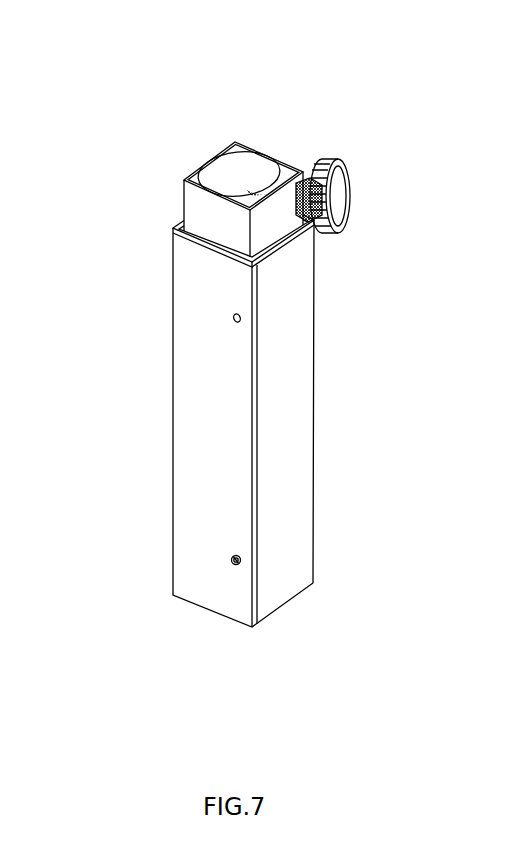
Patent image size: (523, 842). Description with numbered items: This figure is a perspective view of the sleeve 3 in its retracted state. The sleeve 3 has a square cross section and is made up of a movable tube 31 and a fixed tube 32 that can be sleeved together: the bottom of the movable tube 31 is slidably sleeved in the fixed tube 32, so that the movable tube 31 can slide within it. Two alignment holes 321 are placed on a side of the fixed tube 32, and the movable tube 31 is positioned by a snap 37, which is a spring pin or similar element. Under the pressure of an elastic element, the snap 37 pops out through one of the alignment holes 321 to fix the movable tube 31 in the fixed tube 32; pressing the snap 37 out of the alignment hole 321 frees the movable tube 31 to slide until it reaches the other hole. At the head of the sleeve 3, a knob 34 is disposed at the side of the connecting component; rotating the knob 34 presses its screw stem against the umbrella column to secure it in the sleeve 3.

The sleeve 3 is at (155, 412).
The movable tube 31 is at (200, 207).
The fixed tube 32 is at (297, 437).
The alignment hole 321 is at (240, 317).
The knob 34 is at (345, 177).
The snap 37 is at (243, 557).